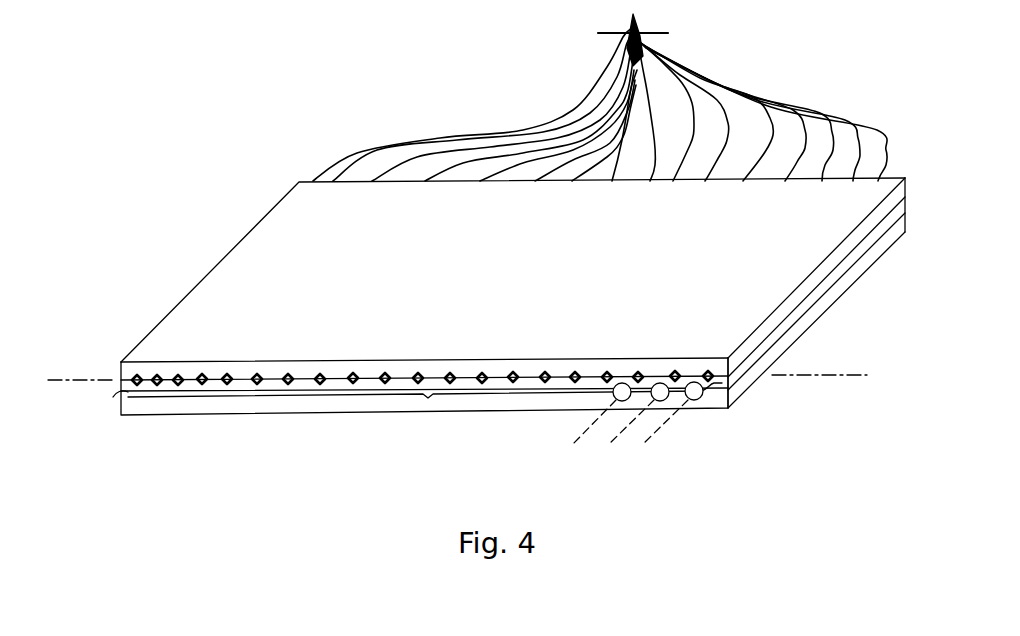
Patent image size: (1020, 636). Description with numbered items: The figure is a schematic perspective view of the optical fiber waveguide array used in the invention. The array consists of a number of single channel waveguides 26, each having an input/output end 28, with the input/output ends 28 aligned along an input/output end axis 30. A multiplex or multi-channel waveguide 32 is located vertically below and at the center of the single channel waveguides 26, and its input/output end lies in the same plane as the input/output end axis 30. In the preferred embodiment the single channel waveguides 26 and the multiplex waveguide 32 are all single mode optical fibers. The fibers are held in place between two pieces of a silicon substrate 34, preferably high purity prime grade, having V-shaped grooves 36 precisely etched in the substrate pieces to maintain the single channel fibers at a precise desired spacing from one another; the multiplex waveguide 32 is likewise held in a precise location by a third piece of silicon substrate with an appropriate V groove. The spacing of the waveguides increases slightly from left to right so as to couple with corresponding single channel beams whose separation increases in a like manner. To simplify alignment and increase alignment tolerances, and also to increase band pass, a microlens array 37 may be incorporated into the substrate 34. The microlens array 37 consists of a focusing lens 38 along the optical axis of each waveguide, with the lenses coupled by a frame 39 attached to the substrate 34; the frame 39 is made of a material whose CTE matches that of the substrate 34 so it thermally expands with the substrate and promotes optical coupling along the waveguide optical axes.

The single channel waveguides 26 is at (121, 378).
The input/output end 28 is at (226, 375).
The input/output end axis 30 is at (803, 377).
The multiplex waveguide 32 is at (420, 400).
The silicon substrate 34 is at (767, 260).
The V-shaped grooves 36 is at (256, 385).
The microlens array 37 is at (727, 409).
The focusing lens 38 is at (663, 400).
The frame 39 is at (600, 390).